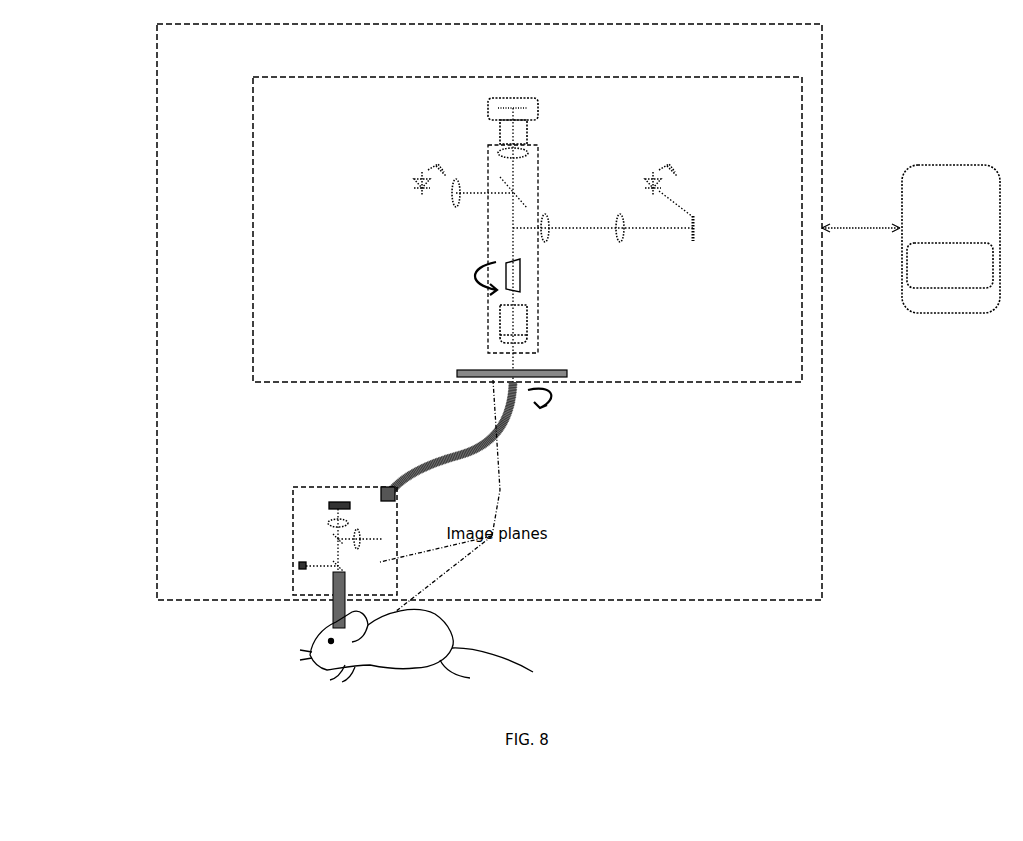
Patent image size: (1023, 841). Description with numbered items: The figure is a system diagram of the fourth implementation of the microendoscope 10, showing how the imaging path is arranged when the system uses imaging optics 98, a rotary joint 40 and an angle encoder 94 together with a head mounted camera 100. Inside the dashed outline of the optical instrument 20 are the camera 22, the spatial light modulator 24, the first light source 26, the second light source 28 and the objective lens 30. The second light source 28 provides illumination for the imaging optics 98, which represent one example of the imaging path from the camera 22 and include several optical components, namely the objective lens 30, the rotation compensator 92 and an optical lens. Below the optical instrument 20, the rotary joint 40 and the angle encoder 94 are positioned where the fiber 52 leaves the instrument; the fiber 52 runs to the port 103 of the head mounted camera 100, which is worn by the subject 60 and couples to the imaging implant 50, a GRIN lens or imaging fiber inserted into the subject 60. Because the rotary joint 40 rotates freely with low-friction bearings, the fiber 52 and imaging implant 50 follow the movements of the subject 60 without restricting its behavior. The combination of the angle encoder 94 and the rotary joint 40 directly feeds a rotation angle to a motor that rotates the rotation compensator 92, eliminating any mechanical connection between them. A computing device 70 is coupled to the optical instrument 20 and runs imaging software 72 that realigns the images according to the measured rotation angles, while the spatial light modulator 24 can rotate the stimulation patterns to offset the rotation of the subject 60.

The microendoscope 10 is at (492, 50).
The optical instrument 20 is at (695, 99).
The camera 22 is at (543, 121).
The spatial light modulator 24 is at (614, 249).
The first light source 26 is at (720, 190).
The second light source 28 is at (367, 188).
The objective lens 30 is at (461, 329).
The rotary joint 40 is at (590, 410).
The imaging implant 50 is at (330, 597).
The fiber 52 is at (496, 436).
The subject 60 is at (385, 676).
The computing device 70 is at (911, 239).
The imaging software 72 is at (950, 265).
The rotation compensator 92 is at (548, 283).
The angle encoder 94 is at (544, 358).
The imaging optics 98 is at (488, 155).
The head mounted camera 100 is at (313, 487).
The port 103 is at (396, 493).